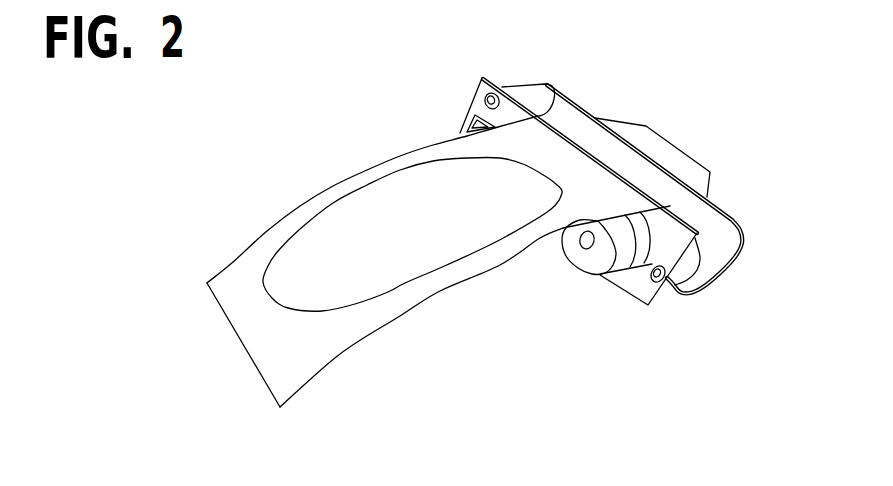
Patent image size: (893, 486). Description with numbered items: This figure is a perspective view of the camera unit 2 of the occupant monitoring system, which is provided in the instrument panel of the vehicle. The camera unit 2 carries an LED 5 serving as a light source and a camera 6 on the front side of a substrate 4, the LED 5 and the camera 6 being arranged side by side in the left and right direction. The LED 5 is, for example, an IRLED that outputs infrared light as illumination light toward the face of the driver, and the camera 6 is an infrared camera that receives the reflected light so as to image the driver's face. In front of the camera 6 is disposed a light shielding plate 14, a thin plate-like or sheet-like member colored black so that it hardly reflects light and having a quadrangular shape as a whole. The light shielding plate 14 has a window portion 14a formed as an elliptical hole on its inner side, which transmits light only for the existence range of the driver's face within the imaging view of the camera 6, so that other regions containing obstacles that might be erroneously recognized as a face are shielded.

The camera unit 2 is at (608, 93).
The substrate 4 is at (490, 93).
The LED 5 is at (465, 118).
The camera 6 is at (583, 273).
The light shielding plate 14 is at (343, 357).
The window portion 14a is at (385, 292).